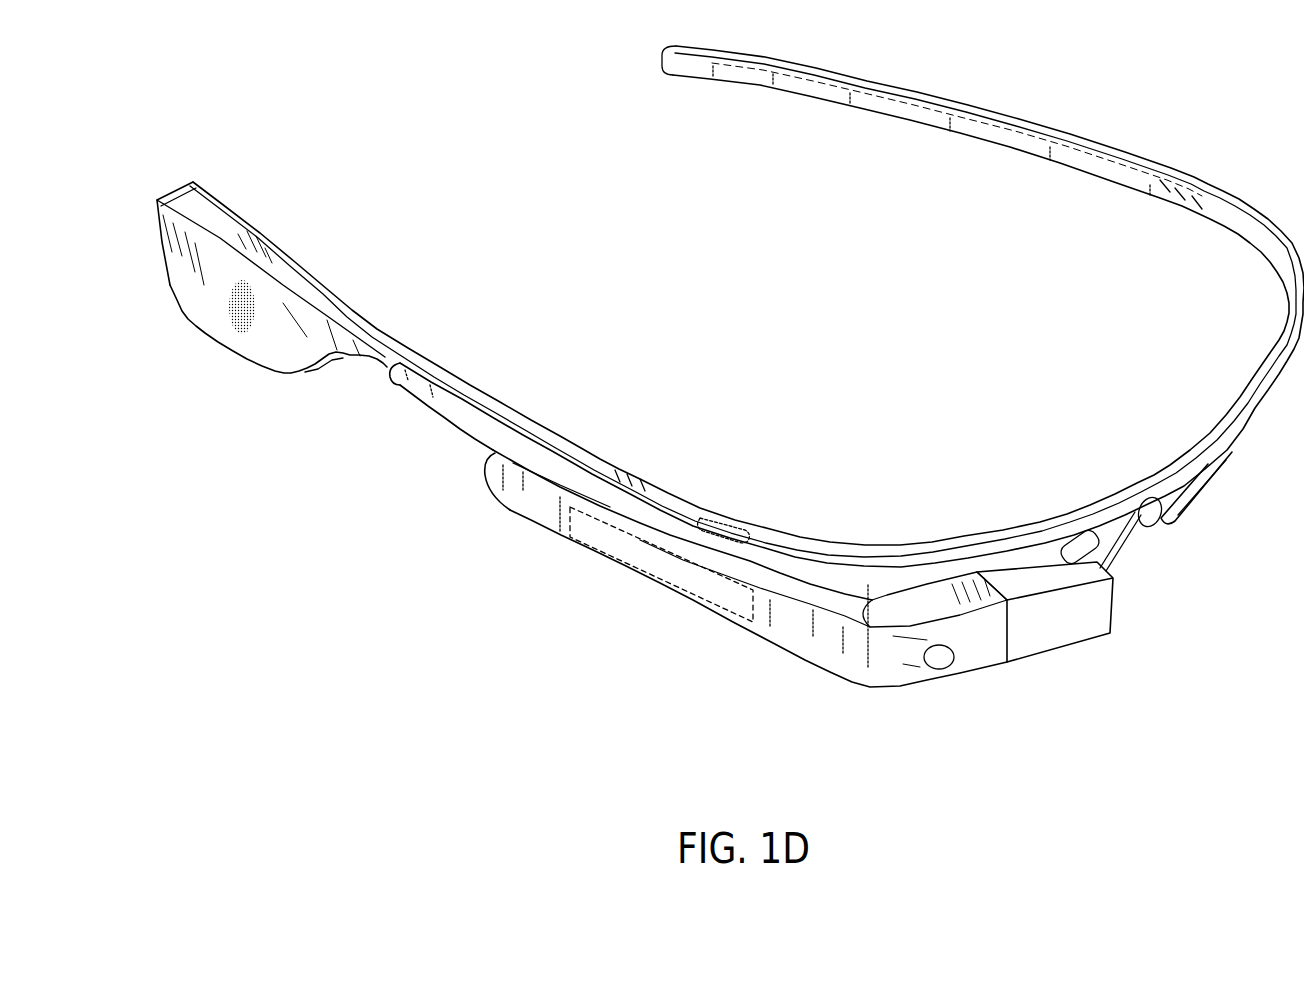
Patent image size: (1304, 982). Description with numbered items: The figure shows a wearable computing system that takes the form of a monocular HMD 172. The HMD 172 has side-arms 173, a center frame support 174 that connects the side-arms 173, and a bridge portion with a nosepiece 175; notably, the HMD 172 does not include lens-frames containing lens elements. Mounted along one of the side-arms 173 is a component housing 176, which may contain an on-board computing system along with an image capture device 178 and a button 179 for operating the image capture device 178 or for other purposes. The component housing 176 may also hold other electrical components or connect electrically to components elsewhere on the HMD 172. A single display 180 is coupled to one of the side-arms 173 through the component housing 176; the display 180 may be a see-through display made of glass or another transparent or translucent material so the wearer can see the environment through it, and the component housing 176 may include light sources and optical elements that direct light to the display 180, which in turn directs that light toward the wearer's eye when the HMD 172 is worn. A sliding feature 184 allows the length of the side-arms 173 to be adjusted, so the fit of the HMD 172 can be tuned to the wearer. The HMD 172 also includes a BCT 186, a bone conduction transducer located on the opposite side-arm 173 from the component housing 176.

The monocular HMD 172 is at (729, 427).
The side-arms 173 is at (876, 86).
The center frame support 174 is at (1137, 483).
The nosepiece 175 is at (1187, 504).
The component housing 176 is at (631, 576).
The image capture device 178 is at (938, 669).
The button 179 is at (711, 517).
The display 180 is at (1068, 650).
The sliding feature 184 is at (440, 401).
The BCT 186 is at (229, 310).